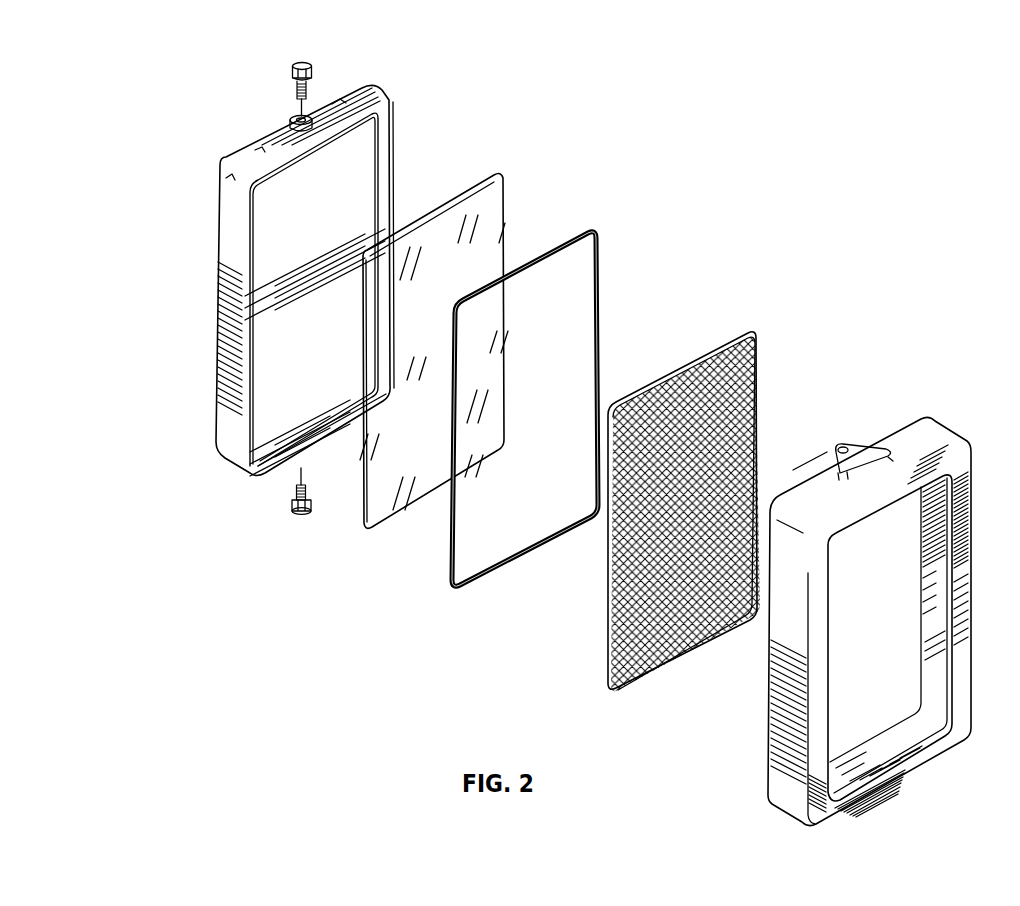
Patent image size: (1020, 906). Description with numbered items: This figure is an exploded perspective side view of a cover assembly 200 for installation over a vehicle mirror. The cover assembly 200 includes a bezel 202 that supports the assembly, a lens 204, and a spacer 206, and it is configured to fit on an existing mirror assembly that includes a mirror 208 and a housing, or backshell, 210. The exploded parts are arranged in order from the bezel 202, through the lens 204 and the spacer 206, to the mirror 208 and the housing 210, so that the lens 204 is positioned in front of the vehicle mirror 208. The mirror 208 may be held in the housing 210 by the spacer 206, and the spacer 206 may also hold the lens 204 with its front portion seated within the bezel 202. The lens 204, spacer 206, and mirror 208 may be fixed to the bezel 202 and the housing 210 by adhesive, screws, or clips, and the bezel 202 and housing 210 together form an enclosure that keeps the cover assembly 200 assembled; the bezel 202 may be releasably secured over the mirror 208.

The cover assembly 200 is at (757, 231).
The bezel 202 is at (937, 422).
The lens 204 is at (752, 333).
The spacer 206 is at (593, 230).
The mirror 208 is at (498, 172).
The housing 210 is at (368, 93).